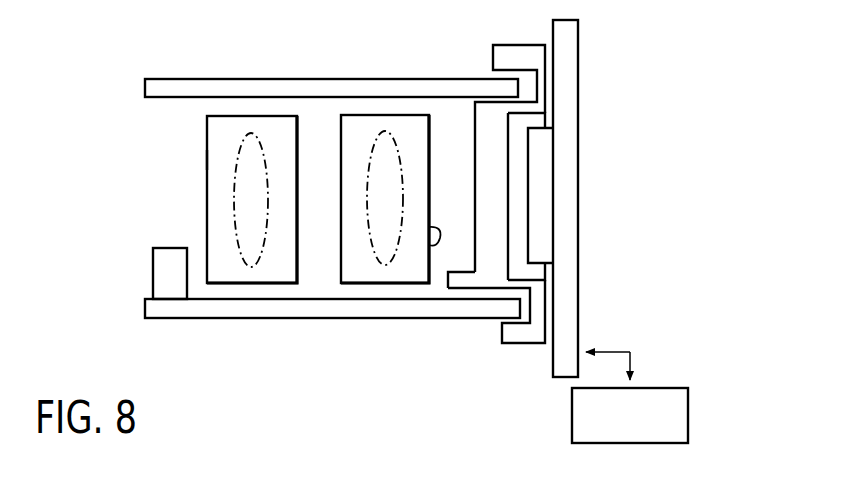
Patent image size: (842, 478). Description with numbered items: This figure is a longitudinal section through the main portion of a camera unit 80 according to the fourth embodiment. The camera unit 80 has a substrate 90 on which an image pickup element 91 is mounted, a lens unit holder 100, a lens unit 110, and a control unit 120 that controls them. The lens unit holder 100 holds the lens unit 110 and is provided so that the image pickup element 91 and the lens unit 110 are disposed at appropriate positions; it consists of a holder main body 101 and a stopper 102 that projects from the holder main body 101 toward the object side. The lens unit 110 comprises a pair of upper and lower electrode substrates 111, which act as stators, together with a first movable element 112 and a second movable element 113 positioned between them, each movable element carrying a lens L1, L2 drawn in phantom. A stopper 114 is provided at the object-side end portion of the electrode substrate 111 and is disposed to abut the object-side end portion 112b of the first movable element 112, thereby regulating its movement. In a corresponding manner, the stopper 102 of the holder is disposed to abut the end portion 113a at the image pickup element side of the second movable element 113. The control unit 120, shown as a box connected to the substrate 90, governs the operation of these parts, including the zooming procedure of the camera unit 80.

The camera unit 80 is at (606, 246).
The substrate 90 is at (632, 16).
The image pickup element 91 is at (541, 207).
The lens unit holder 100 is at (493, 133).
The holder main body 101 is at (488, 268).
The stopper 102 is at (450, 276).
The lens unit 110 is at (465, 79).
The electrode substrates 111 is at (163, 79).
The first movable element 112 is at (222, 116).
The end portion 112b is at (207, 160).
The second movable element 113 is at (350, 115).
The end portion 113a is at (432, 245).
The stopper 114 is at (172, 247).
The first lens L1 is at (262, 143).
The second lens L2 is at (397, 143).
The control unit 120 is at (572, 418).